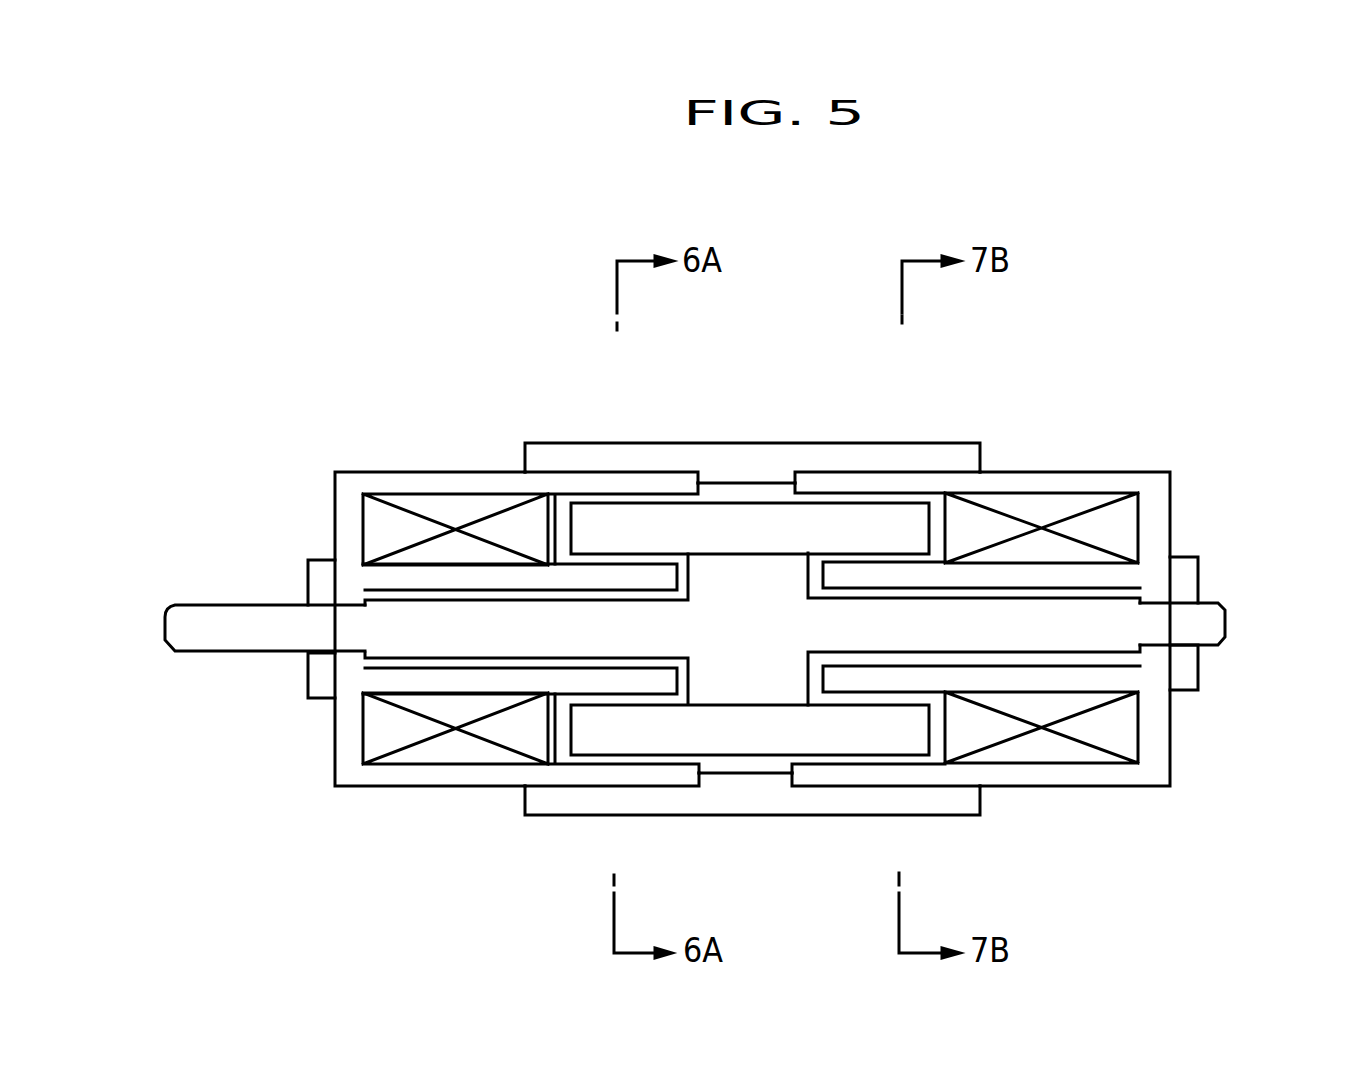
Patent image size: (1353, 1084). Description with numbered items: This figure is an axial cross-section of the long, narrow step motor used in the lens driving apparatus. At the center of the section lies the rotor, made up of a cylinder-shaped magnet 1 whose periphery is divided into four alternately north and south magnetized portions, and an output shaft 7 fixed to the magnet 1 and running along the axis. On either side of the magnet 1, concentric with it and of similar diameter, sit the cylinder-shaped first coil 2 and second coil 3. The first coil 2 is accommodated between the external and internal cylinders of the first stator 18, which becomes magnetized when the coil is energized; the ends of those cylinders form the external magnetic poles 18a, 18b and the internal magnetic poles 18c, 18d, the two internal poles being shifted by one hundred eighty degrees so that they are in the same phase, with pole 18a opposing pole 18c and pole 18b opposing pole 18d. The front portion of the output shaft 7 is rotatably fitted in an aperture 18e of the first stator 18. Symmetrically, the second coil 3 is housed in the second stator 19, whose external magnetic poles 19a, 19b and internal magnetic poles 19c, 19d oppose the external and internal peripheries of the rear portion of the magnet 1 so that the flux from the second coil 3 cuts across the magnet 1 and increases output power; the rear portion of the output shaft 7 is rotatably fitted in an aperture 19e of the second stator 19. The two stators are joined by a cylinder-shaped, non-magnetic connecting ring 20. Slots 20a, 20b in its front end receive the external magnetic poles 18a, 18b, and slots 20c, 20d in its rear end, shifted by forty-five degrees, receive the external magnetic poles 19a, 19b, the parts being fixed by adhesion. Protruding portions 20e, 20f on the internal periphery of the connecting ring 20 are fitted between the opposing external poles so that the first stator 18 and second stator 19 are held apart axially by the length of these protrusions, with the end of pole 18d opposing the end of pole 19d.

The magnet 1 is at (837, 740).
The first coil 2 is at (438, 755).
The second coil 3 is at (1088, 755).
The output shaft 7 is at (238, 642).
The first stator 18 is at (428, 472).
The external magnetic pole 18a is at (572, 473).
The external magnetic pole 18b is at (578, 777).
The internal magnetic pole 18c is at (617, 573).
The internal magnetic pole 18d is at (660, 672).
The aperture 18e is at (350, 598).
The second stator 19 is at (1106, 478).
The external magnetic pole 19a is at (957, 488).
The external magnetic pole 19b is at (957, 777).
The internal magnetic pole 19c is at (890, 577).
The internal magnetic pole 19d is at (856, 686).
The aperture 19e is at (1158, 598).
The connecting ring 20 is at (790, 444).
The slot 20a is at (631, 473).
The slot 20b is at (658, 787).
The slot 20c is at (893, 470).
The slot 20d is at (921, 789).
The protruding portion 20e is at (716, 470).
The protruding portion 20f is at (748, 775).